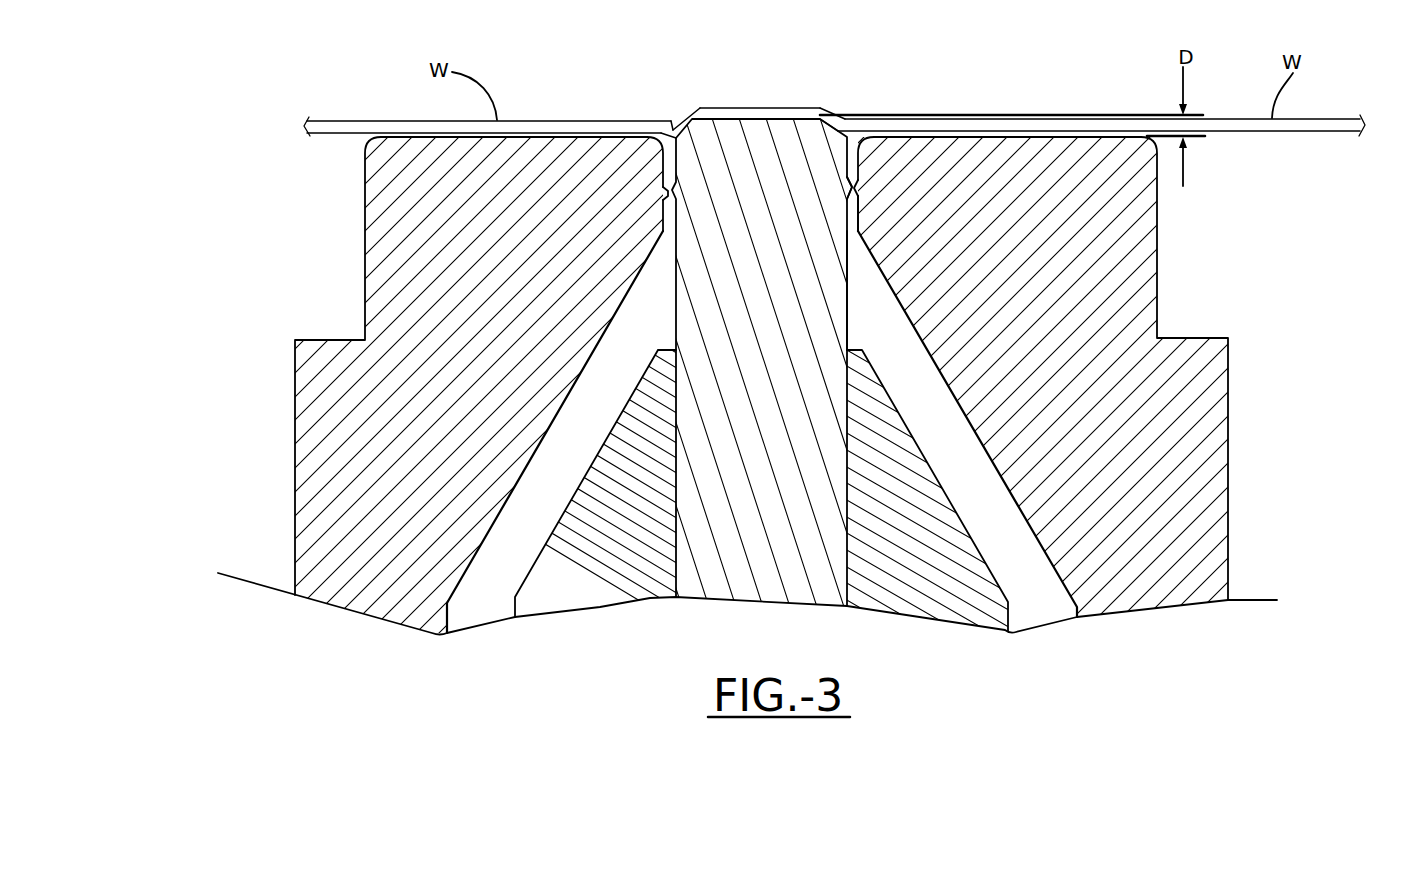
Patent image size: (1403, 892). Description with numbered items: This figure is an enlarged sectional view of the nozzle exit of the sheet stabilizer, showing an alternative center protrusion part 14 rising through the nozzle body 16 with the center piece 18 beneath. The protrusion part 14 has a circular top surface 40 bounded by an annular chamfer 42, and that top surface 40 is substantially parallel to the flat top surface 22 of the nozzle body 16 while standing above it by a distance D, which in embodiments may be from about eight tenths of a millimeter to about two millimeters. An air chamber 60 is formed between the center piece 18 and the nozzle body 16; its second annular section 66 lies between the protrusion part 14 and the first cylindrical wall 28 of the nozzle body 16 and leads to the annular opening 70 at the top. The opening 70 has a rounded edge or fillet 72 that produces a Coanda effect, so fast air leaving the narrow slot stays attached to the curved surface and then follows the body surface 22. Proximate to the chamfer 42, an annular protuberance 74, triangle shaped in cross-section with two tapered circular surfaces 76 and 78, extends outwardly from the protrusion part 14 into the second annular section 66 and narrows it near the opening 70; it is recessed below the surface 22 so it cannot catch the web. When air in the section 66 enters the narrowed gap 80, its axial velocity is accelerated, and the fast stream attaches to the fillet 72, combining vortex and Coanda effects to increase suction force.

The center protrusion part 14 is at (766, 508).
The nozzle body 16 is at (338, 422).
The center piece 18 is at (896, 560).
The flat top surface 22 is at (510, 122).
The first cylindrical wall 28 is at (860, 218).
The circular top surface 40 is at (788, 98).
The annular chamfer 42 is at (691, 106).
The air chamber 60 is at (952, 414).
The second annular section 66 is at (853, 238).
The annular opening 70 is at (673, 116).
The rounded edge or fillet 72 is at (661, 122).
The annular protuberance 74 is at (658, 196).
The tapered circular surface 76 is at (866, 194).
The tapered circular surface 78 is at (864, 168).
The narrowed gap 80 is at (866, 182).